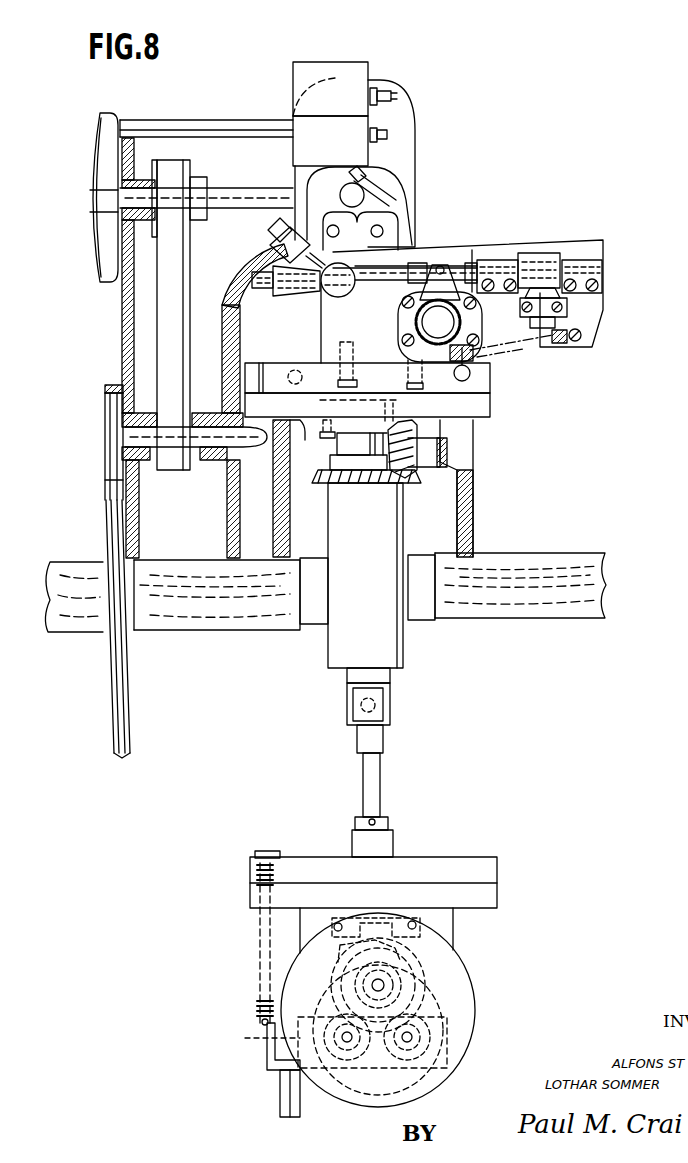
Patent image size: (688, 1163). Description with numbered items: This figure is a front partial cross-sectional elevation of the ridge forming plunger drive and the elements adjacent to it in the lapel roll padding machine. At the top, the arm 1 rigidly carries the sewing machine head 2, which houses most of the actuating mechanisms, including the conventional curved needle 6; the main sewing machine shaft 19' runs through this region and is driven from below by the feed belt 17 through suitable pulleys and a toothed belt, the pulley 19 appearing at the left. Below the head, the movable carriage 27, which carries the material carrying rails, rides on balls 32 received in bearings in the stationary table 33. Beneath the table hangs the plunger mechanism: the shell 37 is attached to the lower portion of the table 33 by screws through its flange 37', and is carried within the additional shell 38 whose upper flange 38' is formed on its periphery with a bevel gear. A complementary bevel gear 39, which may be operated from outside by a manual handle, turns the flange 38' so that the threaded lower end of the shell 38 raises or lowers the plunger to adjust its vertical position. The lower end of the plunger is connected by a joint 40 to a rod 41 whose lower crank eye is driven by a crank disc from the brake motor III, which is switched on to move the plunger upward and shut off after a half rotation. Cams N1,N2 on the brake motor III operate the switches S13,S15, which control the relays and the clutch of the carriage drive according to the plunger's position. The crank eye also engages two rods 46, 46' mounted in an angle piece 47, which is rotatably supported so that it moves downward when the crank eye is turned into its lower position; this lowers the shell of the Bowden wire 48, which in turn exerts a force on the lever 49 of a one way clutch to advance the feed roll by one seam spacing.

The arm 1 is at (128, 358).
The sewing machine head 2 is at (403, 128).
The curved needle 6 is at (388, 196).
The feed belt 17 is at (112, 537).
The pulley 19 is at (148, 291).
The main sewing machine shaft 19' is at (206, 180).
The movable carriage 27 is at (278, 373).
The balls 32 is at (470, 373).
The stationary table 33 is at (477, 405).
The shell 37 is at (362, 444).
The flange 37' is at (312, 441).
The additional shell 38 is at (347, 575).
The upper flange 38' is at (359, 488).
The bevel gear 39 is at (423, 460).
The joint 40 is at (377, 705).
The rod 41 is at (374, 786).
The rod 46 is at (398, 1030).
The rod 46' is at (259, 1038).
The angle piece 47 is at (268, 1063).
The Bowden wire 48 is at (258, 290).
The lever 49 is at (443, 265).
The brake motor III is at (443, 930).
The cams N1,N2 is at (427, 985).
The switches S13,S15 is at (269, 938).